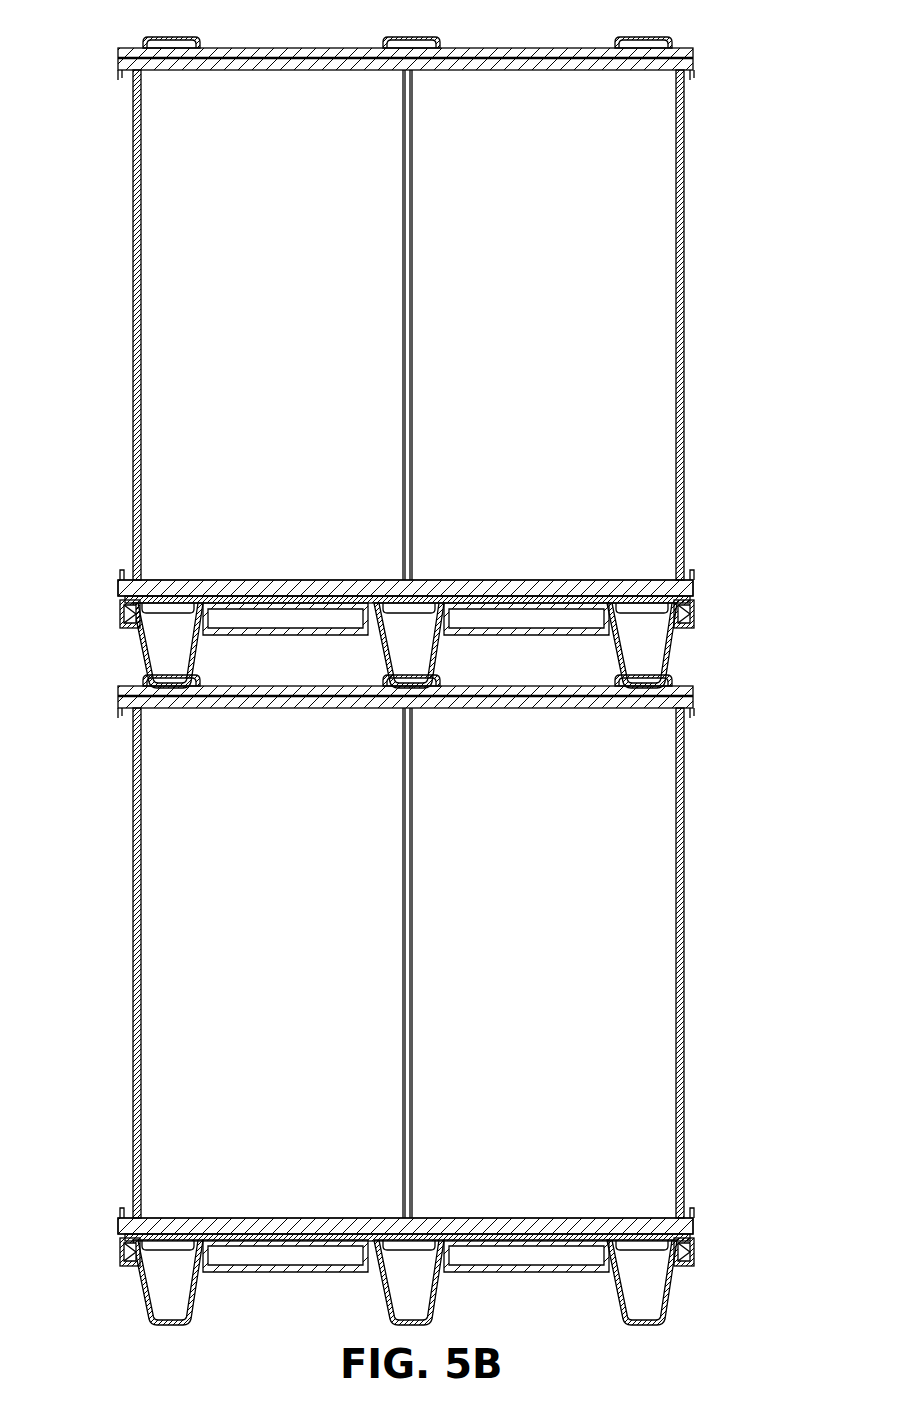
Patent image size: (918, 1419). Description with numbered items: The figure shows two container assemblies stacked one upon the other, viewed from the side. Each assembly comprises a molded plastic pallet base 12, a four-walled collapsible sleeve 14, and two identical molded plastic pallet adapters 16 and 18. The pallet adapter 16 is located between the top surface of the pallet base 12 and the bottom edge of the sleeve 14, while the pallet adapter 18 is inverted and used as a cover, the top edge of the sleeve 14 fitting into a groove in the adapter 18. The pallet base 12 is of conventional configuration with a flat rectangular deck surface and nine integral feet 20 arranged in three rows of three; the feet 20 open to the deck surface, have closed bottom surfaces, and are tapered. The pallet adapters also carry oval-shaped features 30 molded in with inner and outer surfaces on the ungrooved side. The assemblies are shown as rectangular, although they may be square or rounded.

The pallet base 12 is at (120, 1252).
The collapsible sleeve 14 is at (133, 368).
The pallet adapter 16 is at (120, 580).
The pallet adapter 18 is at (143, 47).
The feet 20 is at (676, 655).
The oval-shaped features 30 is at (652, 48).